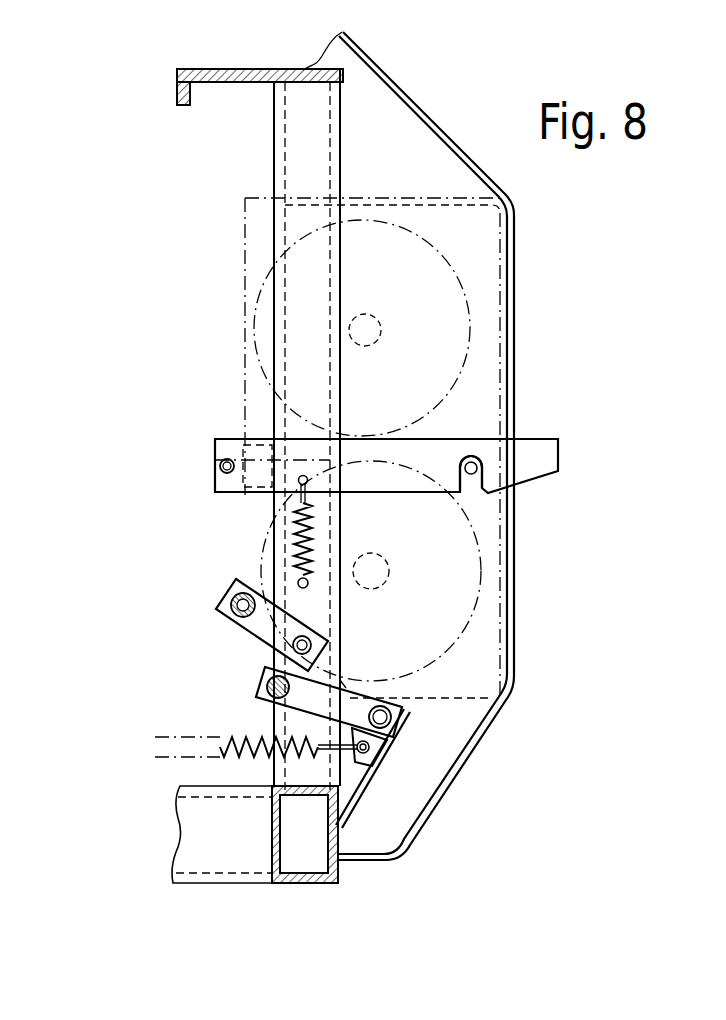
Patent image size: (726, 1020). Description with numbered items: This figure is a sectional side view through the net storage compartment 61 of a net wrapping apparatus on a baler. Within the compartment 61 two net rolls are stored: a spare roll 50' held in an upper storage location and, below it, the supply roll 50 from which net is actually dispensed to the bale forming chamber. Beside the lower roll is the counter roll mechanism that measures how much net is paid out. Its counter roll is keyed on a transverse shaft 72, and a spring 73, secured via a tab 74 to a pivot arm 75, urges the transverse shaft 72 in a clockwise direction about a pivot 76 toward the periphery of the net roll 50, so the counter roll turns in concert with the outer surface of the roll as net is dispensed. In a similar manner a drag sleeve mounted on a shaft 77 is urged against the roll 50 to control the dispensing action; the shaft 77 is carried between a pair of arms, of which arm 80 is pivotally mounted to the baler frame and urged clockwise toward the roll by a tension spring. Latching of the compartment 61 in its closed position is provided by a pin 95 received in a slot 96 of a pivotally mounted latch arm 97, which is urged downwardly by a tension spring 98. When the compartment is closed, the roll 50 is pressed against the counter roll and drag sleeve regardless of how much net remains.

The storage compartment 61 is at (550, 308).
The spare roll 50' is at (426, 346).
The supply roll 50 is at (425, 455).
The latch arm 97 is at (446, 440).
The pin 95 is at (463, 485).
The slot 96 is at (468, 476).
The tension spring 98 is at (292, 531).
The shaft 77 is at (240, 586).
The arm 80 is at (254, 633).
The transverse shaft 72 is at (266, 688).
The pivot 76 is at (391, 718).
The pivot arm 75 is at (345, 684).
The tab 74 is at (393, 752).
The spring 73 is at (247, 757).